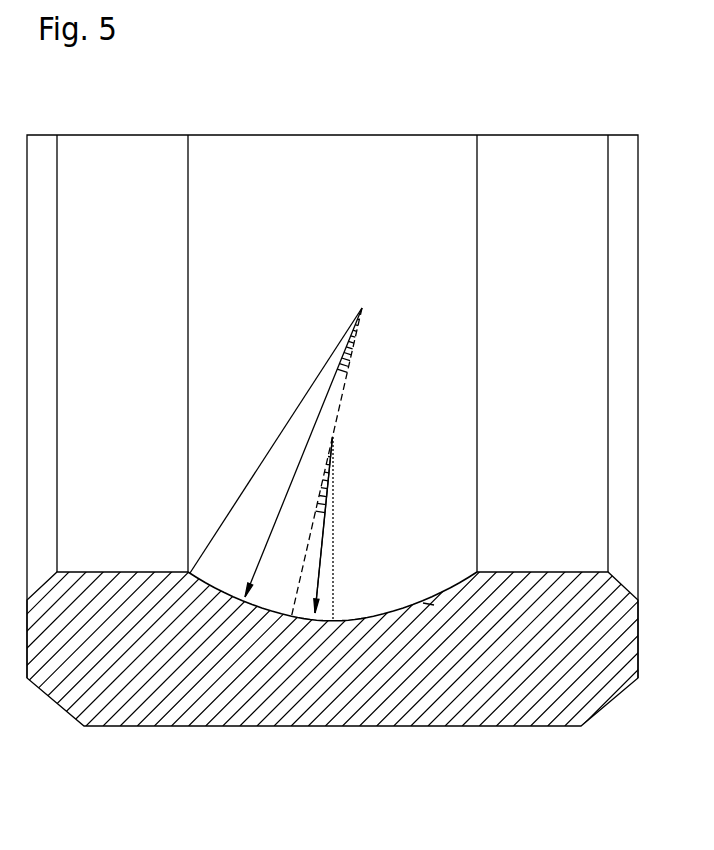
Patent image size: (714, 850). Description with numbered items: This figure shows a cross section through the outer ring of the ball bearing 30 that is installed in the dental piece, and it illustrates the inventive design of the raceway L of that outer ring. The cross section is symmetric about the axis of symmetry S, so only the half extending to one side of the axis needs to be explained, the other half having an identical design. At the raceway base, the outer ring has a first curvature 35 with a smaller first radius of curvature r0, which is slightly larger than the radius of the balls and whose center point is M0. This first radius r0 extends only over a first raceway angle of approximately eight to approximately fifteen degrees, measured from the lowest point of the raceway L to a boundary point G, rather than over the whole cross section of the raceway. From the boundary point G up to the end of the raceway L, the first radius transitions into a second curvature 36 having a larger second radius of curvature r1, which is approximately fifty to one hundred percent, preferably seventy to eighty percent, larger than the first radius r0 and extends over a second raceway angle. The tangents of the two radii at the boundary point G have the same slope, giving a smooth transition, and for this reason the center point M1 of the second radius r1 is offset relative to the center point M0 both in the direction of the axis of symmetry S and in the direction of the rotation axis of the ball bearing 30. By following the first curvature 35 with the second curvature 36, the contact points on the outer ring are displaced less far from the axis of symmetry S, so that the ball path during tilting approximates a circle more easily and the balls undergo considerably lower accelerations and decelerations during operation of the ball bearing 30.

The ball bearing 30 is at (243, 181).
The first curvature 35 is at (333, 621).
The second curvature 36 is at (202, 597).
The center point of the second radius of curvature M1 is at (362, 308).
The center point of the first radius of curvature M0 is at (333, 437).
The second radius of curvature r1 is at (265, 545).
The first radius of curvature r0 is at (322, 573).
The boundary point G is at (292, 616).
The axis of symmetry S is at (338, 462).
The raceway L is at (428, 605).